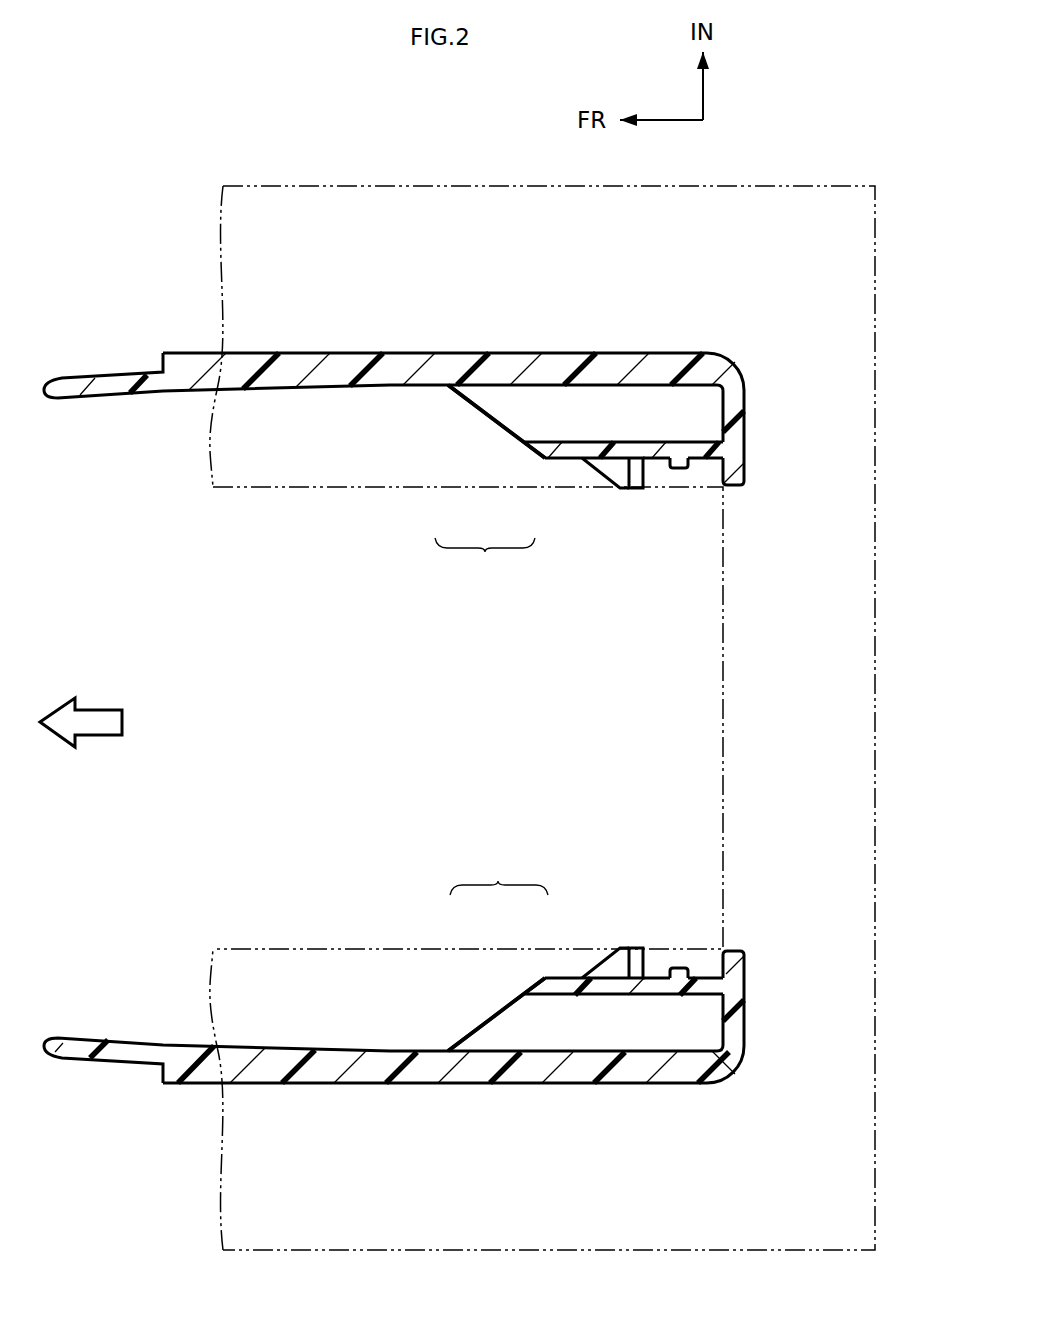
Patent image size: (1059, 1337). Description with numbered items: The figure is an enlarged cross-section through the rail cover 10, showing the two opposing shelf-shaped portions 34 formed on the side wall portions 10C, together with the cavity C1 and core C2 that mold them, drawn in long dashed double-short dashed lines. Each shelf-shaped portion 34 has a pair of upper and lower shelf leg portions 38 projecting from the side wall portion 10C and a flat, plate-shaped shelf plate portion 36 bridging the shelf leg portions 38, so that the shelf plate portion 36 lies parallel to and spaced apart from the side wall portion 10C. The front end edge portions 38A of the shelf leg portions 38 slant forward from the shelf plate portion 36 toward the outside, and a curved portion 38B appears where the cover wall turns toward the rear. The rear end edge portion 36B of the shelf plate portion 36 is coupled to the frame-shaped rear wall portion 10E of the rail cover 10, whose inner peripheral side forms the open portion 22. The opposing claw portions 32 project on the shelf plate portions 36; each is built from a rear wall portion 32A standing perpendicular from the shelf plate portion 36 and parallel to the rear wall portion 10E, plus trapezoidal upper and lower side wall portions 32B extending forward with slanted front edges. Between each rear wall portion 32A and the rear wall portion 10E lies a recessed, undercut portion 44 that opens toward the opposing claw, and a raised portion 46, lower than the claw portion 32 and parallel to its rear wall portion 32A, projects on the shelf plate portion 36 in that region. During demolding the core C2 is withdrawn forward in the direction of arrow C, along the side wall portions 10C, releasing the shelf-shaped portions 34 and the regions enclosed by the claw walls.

The rail cover 10 is at (517, 306).
The side wall portion 10C is at (377, 351).
The rear wall portion 10E is at (747, 428).
The open portion 22 is at (734, 490).
The claw portion 32 is at (632, 494).
The rear wall portion 32A is at (655, 462).
The side wall portion 32B is at (617, 467).
The shelf-shaped portion 34 is at (491, 716).
The shelf plate portion 36 is at (565, 462).
The rear end edge portion 36B is at (712, 462).
The shelf leg portion 38 is at (490, 436).
The front end edge portion 38A is at (479, 408).
The curved portion 38B is at (746, 392).
The recessed portion 44 is at (692, 481).
The raised portion 46 is at (674, 474).
The arrow C is at (83, 708).
The cavity C1 is at (250, 183).
The core C2 is at (260, 490).